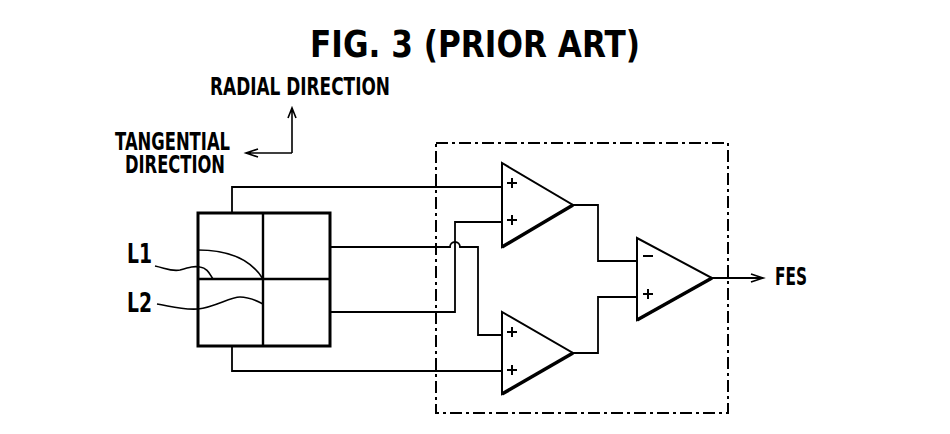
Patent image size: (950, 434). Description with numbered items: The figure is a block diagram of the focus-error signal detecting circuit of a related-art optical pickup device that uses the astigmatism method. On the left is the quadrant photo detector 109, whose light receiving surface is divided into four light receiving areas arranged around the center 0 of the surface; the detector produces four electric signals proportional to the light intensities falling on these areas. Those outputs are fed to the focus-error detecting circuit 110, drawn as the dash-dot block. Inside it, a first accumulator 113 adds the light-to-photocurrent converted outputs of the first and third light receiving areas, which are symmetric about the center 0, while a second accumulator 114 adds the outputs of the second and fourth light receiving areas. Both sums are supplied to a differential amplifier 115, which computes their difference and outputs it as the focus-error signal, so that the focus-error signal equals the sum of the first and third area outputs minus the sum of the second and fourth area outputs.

The center of the light receiving surface 0 is at (198, 250).
The quadrant photo detector 109 is at (198, 330).
The focus-error detecting circuit 110 is at (728, 163).
The first accumulator 113 is at (545, 372).
The second accumulator 114 is at (545, 183).
The differential amplifier 115 is at (670, 253).